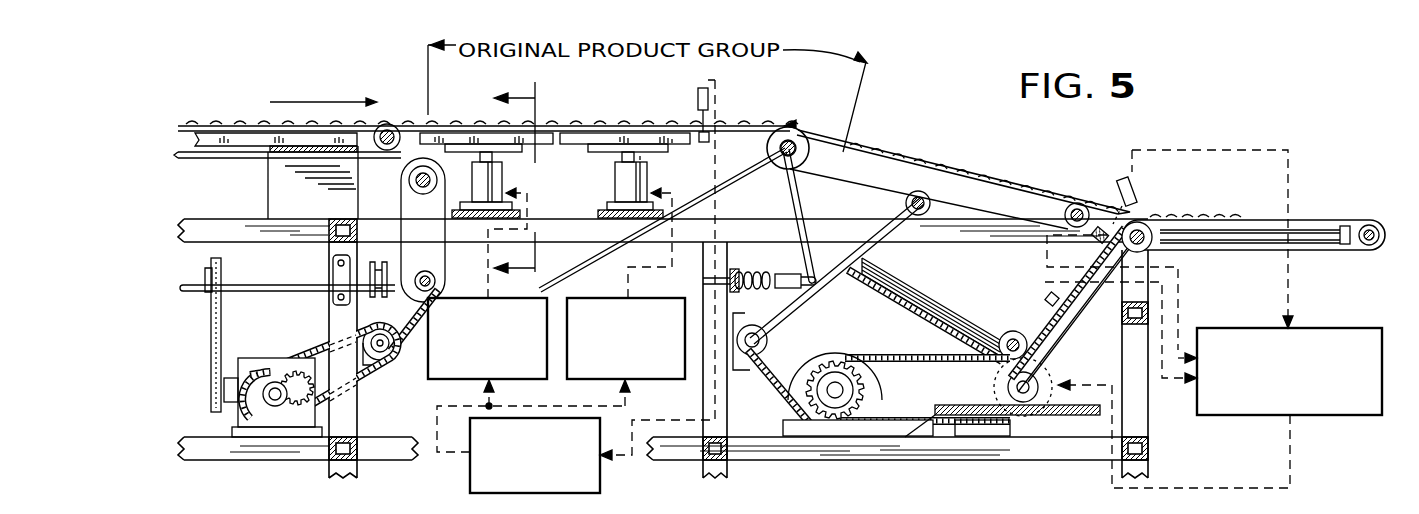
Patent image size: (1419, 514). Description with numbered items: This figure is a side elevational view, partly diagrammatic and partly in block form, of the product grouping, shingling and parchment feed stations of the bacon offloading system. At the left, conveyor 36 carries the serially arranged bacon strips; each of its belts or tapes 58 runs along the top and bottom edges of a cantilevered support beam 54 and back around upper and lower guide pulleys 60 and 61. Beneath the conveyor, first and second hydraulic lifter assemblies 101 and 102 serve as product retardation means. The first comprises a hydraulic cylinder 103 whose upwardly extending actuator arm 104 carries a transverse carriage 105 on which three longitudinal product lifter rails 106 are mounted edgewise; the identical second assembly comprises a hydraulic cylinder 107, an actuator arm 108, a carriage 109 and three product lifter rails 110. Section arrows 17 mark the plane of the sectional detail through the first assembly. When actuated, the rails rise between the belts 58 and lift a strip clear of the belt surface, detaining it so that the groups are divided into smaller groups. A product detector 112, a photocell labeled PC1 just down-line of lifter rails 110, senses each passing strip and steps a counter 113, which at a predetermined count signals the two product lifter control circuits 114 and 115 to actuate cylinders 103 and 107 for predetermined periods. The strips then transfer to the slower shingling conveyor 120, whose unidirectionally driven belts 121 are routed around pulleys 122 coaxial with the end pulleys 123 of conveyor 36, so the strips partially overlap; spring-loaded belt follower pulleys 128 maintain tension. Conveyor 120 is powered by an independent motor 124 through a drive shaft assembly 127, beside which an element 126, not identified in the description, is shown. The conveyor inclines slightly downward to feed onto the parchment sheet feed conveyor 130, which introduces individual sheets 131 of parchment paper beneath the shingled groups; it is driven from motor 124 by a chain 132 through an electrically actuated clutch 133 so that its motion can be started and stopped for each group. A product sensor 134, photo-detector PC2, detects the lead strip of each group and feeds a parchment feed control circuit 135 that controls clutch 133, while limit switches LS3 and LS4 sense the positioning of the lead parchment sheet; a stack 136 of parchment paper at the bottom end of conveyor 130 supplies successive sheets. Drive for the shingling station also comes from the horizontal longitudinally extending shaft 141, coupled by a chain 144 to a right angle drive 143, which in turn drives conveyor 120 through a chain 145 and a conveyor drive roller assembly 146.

The conveyor 36 is at (222, 123).
The cantilevered support beam 54 is at (222, 160).
The belt or tape 58 is at (562, 116).
The upper guide pulley 60 is at (389, 123).
The lower guide pulley 61 is at (422, 189).
The first hydraulic lifter assembly 101 is at (479, 196).
The second hydraulic lifter assembly 102 is at (604, 197).
The hydraulic cylinder 103 is at (498, 178).
The actuator arm 104 is at (488, 150).
The carriage 105 is at (462, 146).
The product lifter rails 106 is at (404, 163).
The hydraulic cylinder 107 is at (624, 183).
The actuator arm 108 is at (640, 156).
The carriage 109 is at (635, 150).
The product lifter rails 110 is at (578, 146).
The product detector 112 is at (698, 90).
The counter 113 is at (470, 468).
The product lifter control circuit 114 is at (457, 381).
The product lifter control circuit 115 is at (647, 380).
The shingling conveyor 120 is at (938, 156).
The conveyor belts 121 is at (803, 198).
The pulleys 122 is at (801, 162).
The end pulleys 123 is at (792, 123).
The motor 124 is at (873, 407).
The connecting link 126 is at (791, 342).
The drive shaft assembly 127 is at (749, 370).
The spring-loaded belt follower pulley 128 is at (802, 272).
The parchment sheet feed conveyor 130 is at (1325, 212).
The sheets of parchment paper 131 is at (1228, 222).
The chain 132 is at (897, 420).
The electrically actuated clutch 133 is at (1000, 418).
The product sensor 134 is at (1121, 180).
The parchment feed control circuit 135 is at (1320, 326).
The stack of parchment paper 136 is at (938, 298).
The horizontal longitudinally extending shaft 141 is at (292, 280).
The right angle drive 143 is at (258, 368).
The chain 144 is at (222, 320).
The chain 145 is at (325, 402).
The conveyor drive roller assembly 146 is at (384, 362).
The section line 17 is at (534, 181).
The photocell PC1 is at (712, 97).
The photo-detector PC2 is at (1136, 199).
The limit switch LS3 is at (1092, 240).
The limit switch LS4 is at (1047, 298).